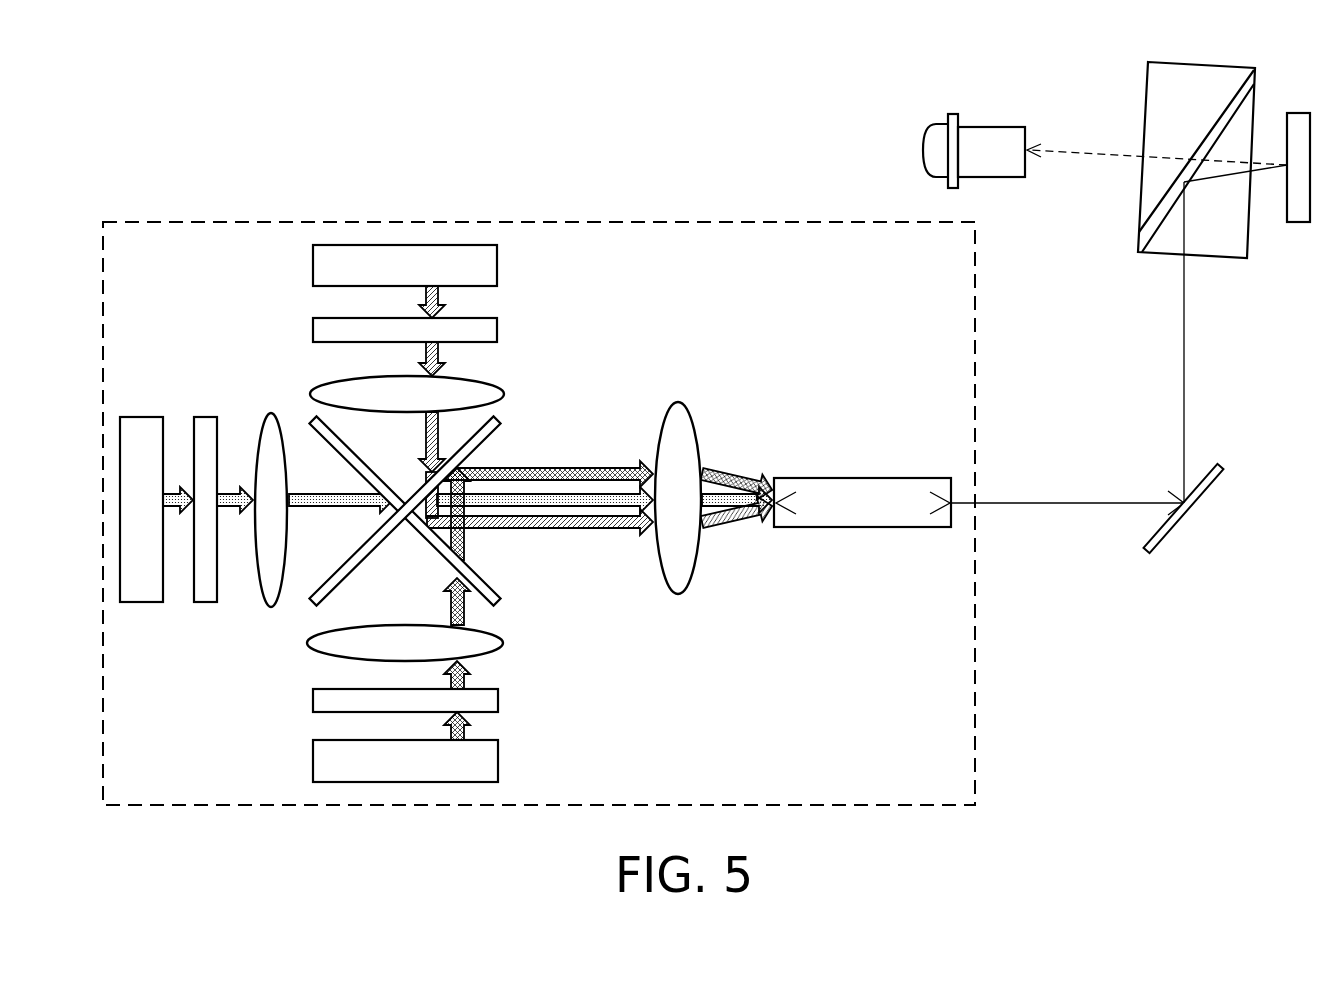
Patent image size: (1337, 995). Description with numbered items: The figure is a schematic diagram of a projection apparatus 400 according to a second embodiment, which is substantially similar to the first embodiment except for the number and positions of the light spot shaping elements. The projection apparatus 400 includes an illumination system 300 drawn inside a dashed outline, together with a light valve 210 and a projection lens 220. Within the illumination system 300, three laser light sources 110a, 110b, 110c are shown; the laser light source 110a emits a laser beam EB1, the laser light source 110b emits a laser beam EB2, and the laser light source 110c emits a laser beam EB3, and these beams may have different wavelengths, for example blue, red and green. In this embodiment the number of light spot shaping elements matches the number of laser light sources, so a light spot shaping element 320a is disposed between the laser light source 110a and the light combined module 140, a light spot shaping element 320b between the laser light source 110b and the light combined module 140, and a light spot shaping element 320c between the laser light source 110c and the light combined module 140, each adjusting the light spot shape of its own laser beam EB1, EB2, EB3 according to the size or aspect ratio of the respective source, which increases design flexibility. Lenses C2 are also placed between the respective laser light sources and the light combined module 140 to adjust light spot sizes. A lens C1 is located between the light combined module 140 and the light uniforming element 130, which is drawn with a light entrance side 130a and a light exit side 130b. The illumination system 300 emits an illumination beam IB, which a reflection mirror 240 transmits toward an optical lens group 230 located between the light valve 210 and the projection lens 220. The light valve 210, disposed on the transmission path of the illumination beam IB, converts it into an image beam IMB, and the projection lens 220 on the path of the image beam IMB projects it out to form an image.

The illumination system 300 is at (208, 221).
The laser light source 110a is at (498, 760).
The laser light source 110b is at (497, 264).
The laser light source 110c is at (140, 603).
The light spot shaping element 320a is at (498, 695).
The light spot shaping element 320b is at (497, 330).
The light spot shaping element 320c is at (205, 603).
The laser beam EB1 is at (468, 733).
The laser beam EB2 is at (440, 352).
The laser beam EB3 is at (238, 512).
The lens C2 is at (275, 607).
The lens C1 is at (680, 594).
The light combined module 140 is at (293, 391).
The light uniforming element 130 is at (852, 528).
The light incident end 130a is at (800, 503).
The light exit end 130b is at (920, 505).
The illumination beam IB is at (1066, 505).
The reflection mirror 240 is at (1183, 510).
The optical lens group 230 is at (1250, 110).
The light valve 210 is at (1299, 122).
The projection lens 220 is at (987, 128).
The image beam IMB is at (1093, 155).
The projection apparatus 400 is at (1235, 723).